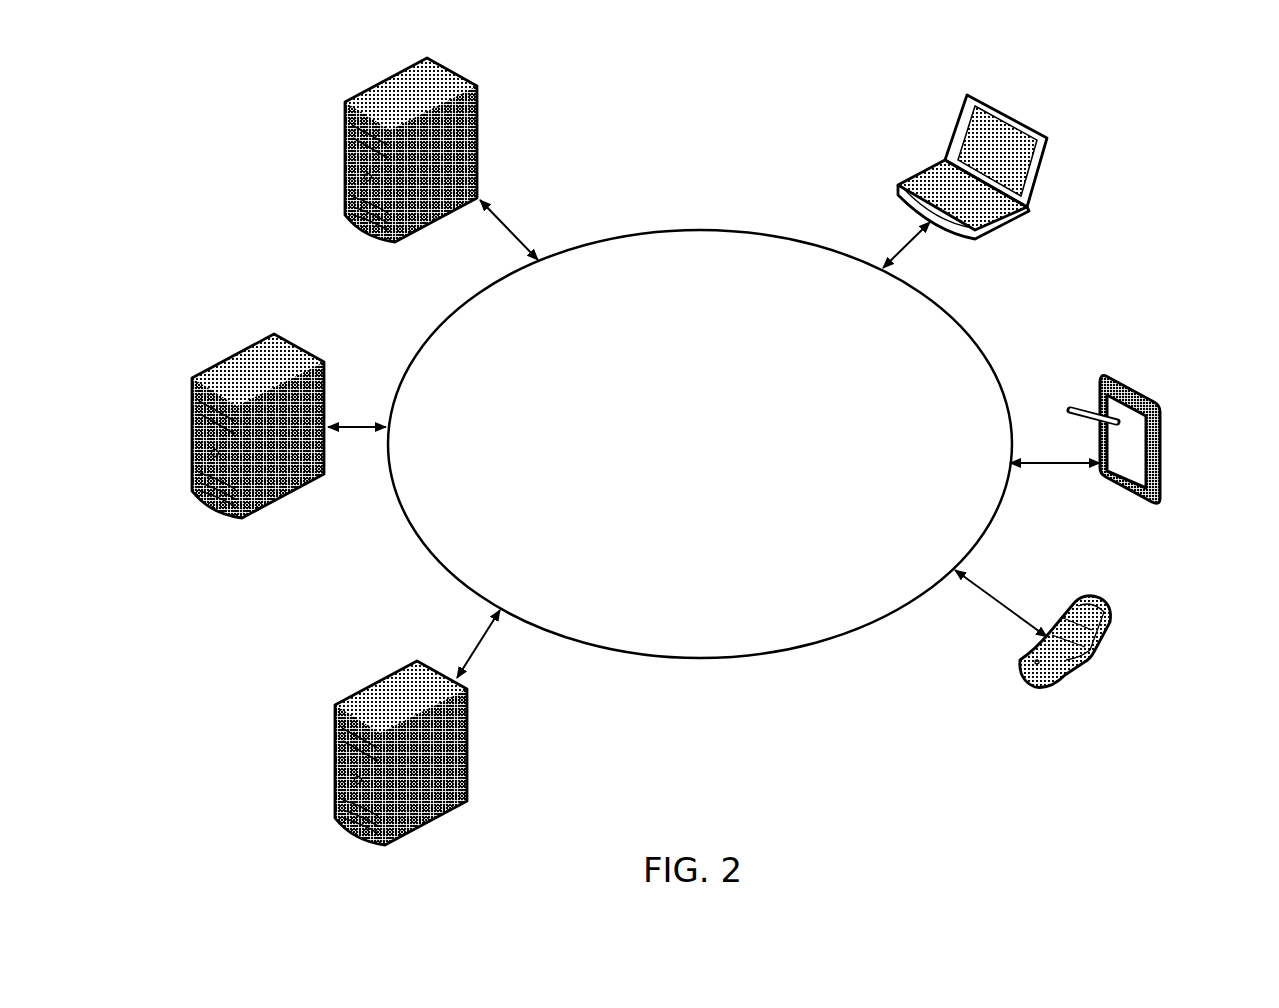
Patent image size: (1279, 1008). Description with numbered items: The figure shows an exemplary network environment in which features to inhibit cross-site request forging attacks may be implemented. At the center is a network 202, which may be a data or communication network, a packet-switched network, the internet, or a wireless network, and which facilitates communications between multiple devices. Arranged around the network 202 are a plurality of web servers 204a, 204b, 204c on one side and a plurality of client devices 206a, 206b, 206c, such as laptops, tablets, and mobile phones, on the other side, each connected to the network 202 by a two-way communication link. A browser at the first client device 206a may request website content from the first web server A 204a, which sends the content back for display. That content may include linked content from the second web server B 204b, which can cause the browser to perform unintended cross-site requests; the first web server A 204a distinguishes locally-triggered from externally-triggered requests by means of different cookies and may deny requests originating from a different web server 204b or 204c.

The network 202 is at (695, 238).
The first web server A 204a is at (372, 80).
The second web server B 204b is at (233, 353).
The web server 204c is at (352, 694).
The first client device 206a is at (943, 158).
The client device 206b is at (1105, 378).
The client device 206c is at (1082, 597).